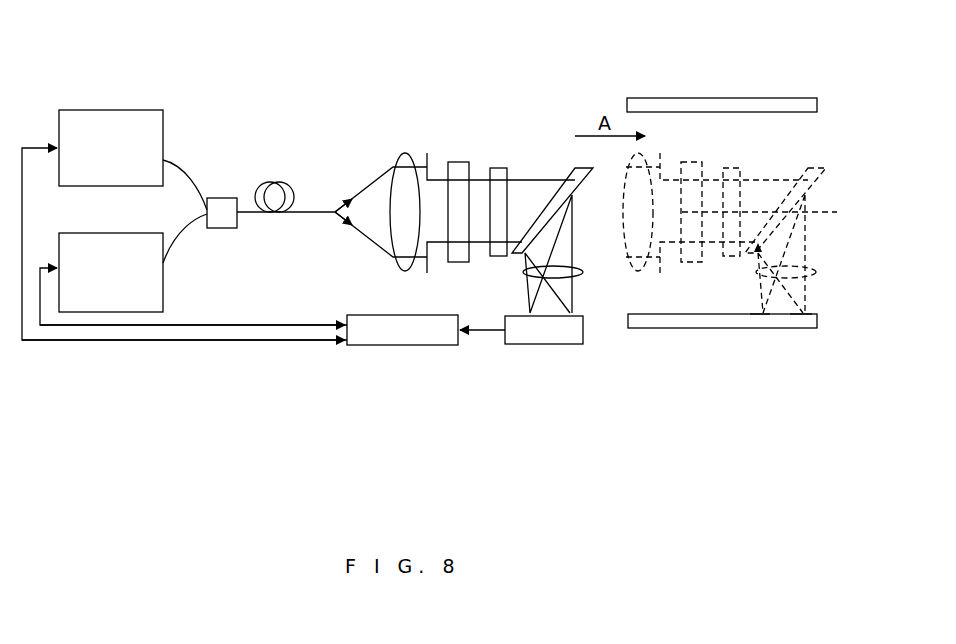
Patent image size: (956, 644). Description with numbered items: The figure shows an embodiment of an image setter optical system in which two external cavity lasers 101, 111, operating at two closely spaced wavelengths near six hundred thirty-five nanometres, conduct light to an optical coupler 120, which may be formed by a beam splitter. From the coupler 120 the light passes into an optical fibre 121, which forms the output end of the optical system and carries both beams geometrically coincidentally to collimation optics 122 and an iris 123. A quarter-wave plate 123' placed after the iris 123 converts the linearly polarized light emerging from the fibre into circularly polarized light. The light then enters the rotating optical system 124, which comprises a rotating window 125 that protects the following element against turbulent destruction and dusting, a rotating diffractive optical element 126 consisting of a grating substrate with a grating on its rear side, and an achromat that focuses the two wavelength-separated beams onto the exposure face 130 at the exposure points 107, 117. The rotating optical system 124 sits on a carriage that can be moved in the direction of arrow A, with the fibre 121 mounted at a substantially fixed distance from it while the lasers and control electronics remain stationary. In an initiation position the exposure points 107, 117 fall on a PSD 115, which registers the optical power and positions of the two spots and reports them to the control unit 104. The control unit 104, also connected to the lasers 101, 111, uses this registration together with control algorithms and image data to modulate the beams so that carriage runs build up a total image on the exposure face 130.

The external cavity laser 101 is at (95, 110).
The external cavity laser 111 is at (163, 300).
The optical coupler 120 is at (228, 198).
The optical fibre 121 is at (280, 182).
The collimation optics 122 is at (398, 155).
The iris 123 is at (470, 130).
The quarter-wave plate 123' is at (472, 276).
The rotating optical system 124 is at (465, 120).
The rotating window 125 is at (493, 168).
The rotating diffractive optical element 126 is at (578, 168).
The PSD (Position Sensing Device) 115 is at (527, 345).
The control unit 104 is at (372, 345).
The exposure face 130 is at (635, 113).
The exposure point 117 is at (755, 318).
The exposure point 107 is at (800, 330).